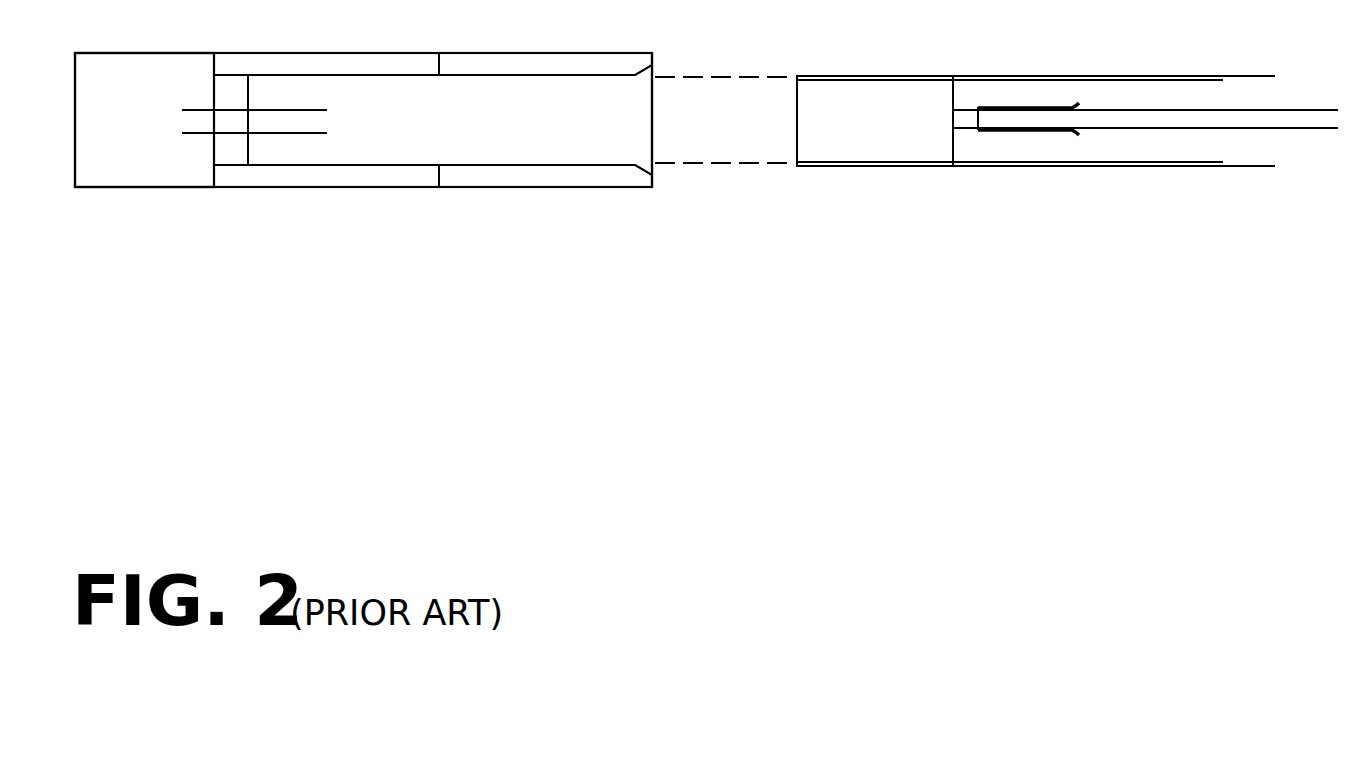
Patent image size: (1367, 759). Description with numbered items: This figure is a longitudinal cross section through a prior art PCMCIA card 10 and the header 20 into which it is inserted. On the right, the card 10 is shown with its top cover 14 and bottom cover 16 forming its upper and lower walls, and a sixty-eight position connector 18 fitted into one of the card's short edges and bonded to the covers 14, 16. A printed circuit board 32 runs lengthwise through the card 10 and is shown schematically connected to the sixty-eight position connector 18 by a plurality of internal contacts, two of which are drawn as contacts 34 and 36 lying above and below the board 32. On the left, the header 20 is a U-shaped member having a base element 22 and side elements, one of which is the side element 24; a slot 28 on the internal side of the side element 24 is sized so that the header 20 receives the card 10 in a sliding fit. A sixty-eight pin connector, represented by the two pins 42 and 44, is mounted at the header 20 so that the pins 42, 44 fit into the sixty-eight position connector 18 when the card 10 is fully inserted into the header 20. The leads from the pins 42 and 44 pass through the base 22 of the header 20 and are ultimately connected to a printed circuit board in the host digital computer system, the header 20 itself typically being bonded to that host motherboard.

The card 10 is at (1150, 209).
The top cover 14 is at (1173, 70).
The bottom cover 16 is at (1217, 168).
The 68 position connector 18 is at (793, 145).
The header 20 is at (375, 210).
The base element 22 is at (144, 108).
The side element 24 is at (500, 48).
The slot 28 is at (481, 135).
The printed circuit board 32 is at (1298, 108).
The internal contact 34 is at (1022, 105).
The internal contact 36 is at (1023, 131).
The pin 42 is at (275, 107).
The pin 44 is at (280, 133).